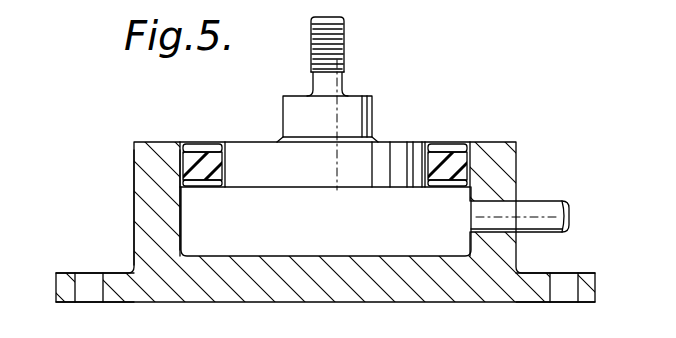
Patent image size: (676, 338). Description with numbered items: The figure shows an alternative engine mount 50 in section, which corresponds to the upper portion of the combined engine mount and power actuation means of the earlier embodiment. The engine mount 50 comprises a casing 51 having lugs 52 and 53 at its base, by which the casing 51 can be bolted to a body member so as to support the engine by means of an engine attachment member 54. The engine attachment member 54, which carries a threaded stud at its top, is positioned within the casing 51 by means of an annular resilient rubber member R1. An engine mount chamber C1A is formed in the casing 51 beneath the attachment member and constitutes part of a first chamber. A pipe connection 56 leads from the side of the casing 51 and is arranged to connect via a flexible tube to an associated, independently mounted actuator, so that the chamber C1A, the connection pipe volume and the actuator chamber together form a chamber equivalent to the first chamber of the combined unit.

The engine mount 50 is at (516, 152).
The casing 51 is at (133, 185).
The lug 52 is at (62, 278).
The lug 53 is at (595, 277).
The engine attachment member 54 is at (362, 116).
The annular resilient rubber member R1 is at (452, 158).
The engine mount chamber C1A is at (352, 232).
The pipe connection 56 is at (556, 205).